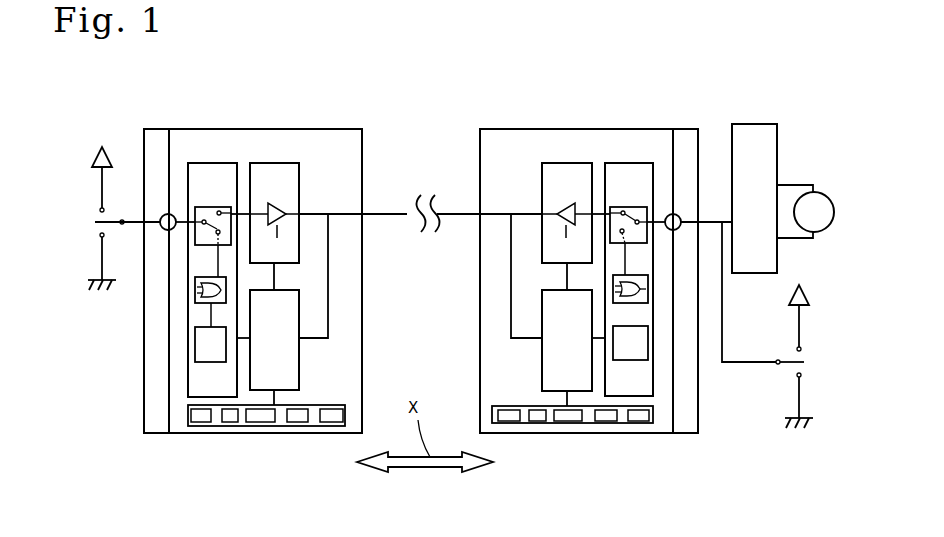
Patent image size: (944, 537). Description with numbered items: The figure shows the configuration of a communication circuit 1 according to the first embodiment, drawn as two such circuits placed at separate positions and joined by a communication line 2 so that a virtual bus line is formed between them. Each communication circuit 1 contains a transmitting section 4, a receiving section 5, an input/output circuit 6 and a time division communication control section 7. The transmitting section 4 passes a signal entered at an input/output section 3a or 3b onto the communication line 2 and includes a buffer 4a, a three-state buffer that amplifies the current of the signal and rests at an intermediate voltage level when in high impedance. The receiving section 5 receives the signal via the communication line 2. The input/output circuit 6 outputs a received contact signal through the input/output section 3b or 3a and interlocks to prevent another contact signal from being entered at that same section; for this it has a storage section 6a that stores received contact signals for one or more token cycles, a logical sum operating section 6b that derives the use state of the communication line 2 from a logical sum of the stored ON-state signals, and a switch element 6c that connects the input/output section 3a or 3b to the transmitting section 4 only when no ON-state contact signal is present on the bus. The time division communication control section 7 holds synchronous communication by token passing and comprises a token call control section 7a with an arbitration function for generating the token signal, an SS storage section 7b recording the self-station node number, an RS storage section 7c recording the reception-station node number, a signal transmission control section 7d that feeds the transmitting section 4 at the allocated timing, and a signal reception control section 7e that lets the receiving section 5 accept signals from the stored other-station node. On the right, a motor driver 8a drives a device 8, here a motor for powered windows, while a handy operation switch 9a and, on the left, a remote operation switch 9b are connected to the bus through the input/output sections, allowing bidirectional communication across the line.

The communication circuit 1 is at (243, 129).
The communication line 2 is at (453, 212).
The input/output section 3a is at (670, 214).
The input/output section 3b is at (170, 213).
The transmitting section 4 is at (299, 164).
The buffer 4a is at (565, 213).
The receiving section 5 is at (295, 360).
The input/output circuit 6 is at (190, 393).
The storage section 6a is at (197, 357).
The logical sum operating section 6b is at (200, 304).
The switch element 6c is at (198, 244).
The time division communication control section 7 is at (186, 425).
The token call control section 7a is at (201, 423).
The SS storage section 7b is at (229, 423).
The RS storage section 7c is at (258, 423).
The signal transmission control section 7d is at (297, 423).
The signal reception control section 7e is at (330, 423).
The device 8 is at (822, 192).
The motor driver 8a is at (757, 125).
The handy operation switch 9a is at (790, 365).
The remote operation switch 9b is at (98, 215).